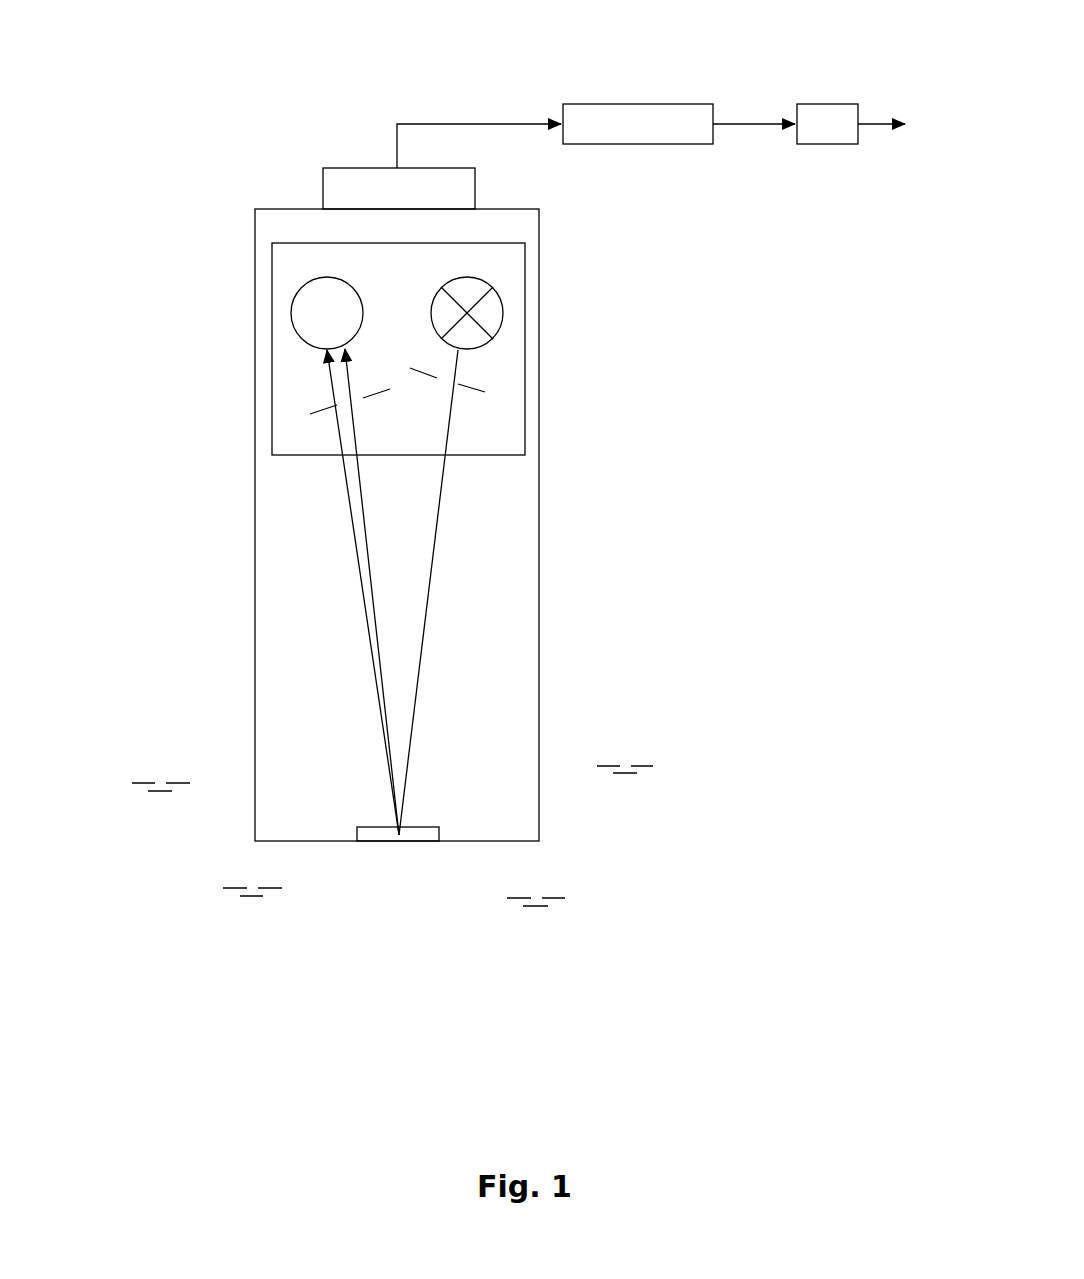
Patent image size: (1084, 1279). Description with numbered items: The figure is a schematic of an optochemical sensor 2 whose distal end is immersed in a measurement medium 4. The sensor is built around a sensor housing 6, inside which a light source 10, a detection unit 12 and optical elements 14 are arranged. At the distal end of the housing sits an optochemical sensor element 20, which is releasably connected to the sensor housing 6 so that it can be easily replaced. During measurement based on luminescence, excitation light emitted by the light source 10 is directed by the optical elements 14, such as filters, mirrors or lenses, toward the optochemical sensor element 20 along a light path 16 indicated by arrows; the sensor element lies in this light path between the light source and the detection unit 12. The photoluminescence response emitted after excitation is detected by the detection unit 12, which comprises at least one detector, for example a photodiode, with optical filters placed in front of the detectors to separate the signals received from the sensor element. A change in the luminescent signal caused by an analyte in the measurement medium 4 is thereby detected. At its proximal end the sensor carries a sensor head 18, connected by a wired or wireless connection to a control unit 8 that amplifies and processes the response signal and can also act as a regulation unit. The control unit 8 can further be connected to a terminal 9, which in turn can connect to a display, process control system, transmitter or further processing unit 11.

The optochemical sensor 2 is at (155, 152).
The measurement medium 4 is at (327, 942).
The sensor housing 6 is at (539, 603).
The control unit 8 is at (608, 102).
The terminal 9 is at (826, 102).
The light source 10 is at (503, 313).
The further processing unit or similar devices 11 is at (902, 124).
The detection unit 12 is at (290, 313).
The optical elements 14 is at (313, 408).
The light path 16 is at (437, 525).
The sensor head 18 is at (475, 189).
The optochemical sensor element 20 is at (441, 829).